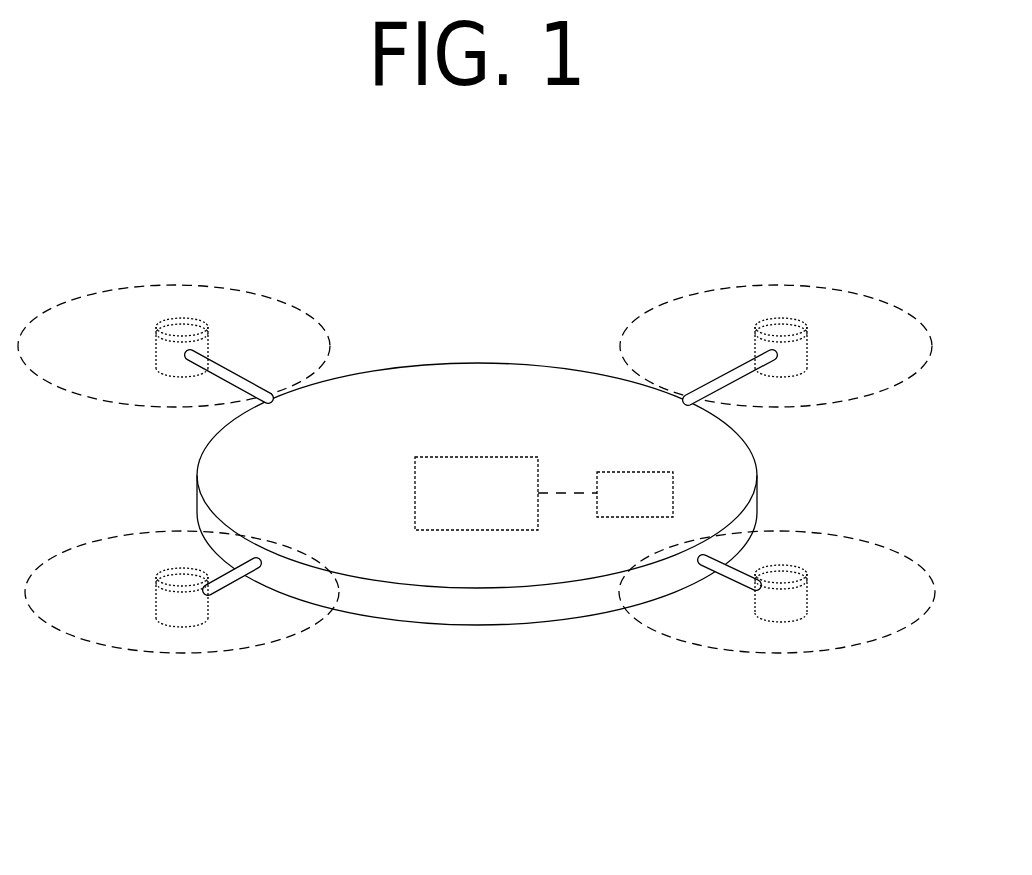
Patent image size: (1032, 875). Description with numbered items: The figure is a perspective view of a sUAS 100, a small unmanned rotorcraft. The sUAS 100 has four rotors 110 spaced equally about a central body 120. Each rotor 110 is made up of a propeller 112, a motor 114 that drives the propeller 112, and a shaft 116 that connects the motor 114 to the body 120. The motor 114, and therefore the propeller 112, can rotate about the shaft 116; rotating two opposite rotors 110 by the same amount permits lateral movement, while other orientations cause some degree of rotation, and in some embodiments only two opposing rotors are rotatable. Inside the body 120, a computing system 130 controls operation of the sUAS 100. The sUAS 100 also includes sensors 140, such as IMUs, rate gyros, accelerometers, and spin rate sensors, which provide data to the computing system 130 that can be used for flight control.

The sUAS 100 is at (128, 115).
The rotor 110 is at (135, 515).
The propeller 112 is at (217, 652).
The motor 114 is at (163, 625).
The shaft 116 is at (233, 588).
The body 120 is at (475, 363).
The computing system 130 is at (475, 530).
The sensors 140 is at (634, 472).